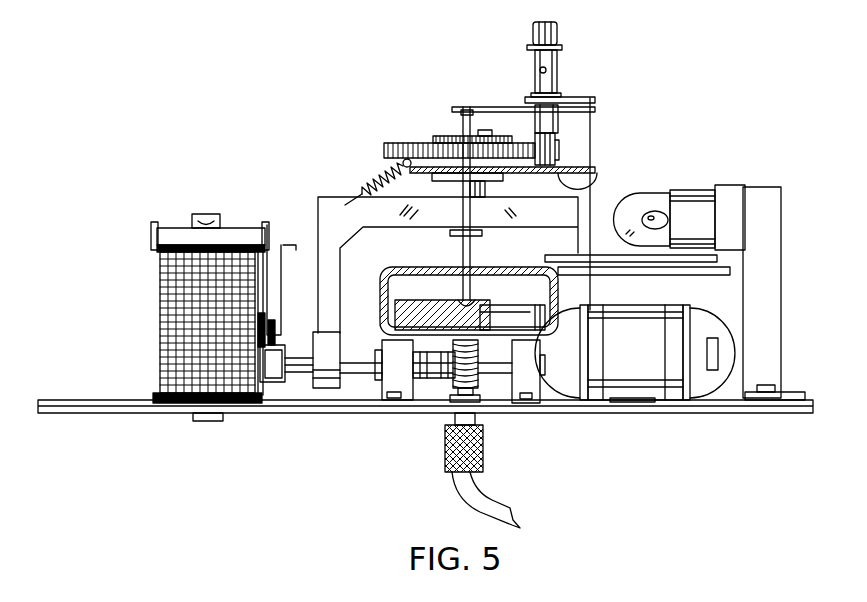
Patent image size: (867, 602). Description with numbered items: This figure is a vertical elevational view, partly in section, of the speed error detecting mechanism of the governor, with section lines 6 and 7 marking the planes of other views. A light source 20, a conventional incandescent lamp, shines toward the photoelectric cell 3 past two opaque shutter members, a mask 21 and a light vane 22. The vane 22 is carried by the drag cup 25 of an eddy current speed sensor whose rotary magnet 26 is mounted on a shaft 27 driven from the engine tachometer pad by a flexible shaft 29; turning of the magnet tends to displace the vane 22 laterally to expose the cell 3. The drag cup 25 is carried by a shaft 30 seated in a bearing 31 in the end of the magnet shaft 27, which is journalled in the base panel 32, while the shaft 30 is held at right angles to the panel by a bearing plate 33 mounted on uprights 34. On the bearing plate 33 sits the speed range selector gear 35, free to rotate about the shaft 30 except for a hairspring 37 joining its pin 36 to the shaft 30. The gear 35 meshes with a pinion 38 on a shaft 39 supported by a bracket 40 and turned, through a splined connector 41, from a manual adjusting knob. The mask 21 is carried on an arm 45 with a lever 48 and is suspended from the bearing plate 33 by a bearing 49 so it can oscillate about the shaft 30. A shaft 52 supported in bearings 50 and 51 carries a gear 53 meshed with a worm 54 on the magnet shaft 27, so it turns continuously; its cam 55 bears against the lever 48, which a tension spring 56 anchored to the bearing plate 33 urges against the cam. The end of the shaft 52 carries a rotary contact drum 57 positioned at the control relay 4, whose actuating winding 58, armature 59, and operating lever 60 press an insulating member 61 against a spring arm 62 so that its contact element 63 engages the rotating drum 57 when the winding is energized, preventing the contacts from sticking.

The photoelectric cell 3 is at (628, 366).
The control relay 4 is at (197, 342).
The section line 6 is at (500, 425).
The section line 7 is at (300, 445).
The light source 20 is at (655, 197).
The shutter member 21 is at (610, 255).
The light vane 22 is at (690, 275).
The drag cup 25 is at (378, 302).
The rotary magnet 26 is at (503, 329).
The magnet shaft 27 is at (497, 371).
The flexible shaft 29 is at (505, 510).
The shaft 30 is at (462, 123).
The bearing 31 is at (460, 300).
The base panel 32 is at (722, 413).
The bearing plate 33 is at (578, 186).
The uprights 34 is at (597, 178).
The speed range selector gear 35 is at (392, 143).
The pin 36 is at (510, 124).
The hairspring 37 is at (440, 136).
The pinion 38 is at (560, 143).
The pinion shaft 39 is at (560, 88).
The bracket 40 is at (595, 100).
The splined connector 41 is at (560, 31).
The arm 45 is at (557, 222).
The lever 48 is at (448, 265).
The bearing 49 is at (503, 177).
The bearing 50 is at (405, 398).
The bearing 51 is at (540, 413).
The shaft 52 is at (373, 350).
The gear 53 is at (394, 370).
The worm 54 is at (420, 363).
The cam 55 is at (330, 388).
The tension spring 56 is at (384, 172).
The rotary contact drum 57 is at (250, 384).
The actuating winding 58 is at (180, 289).
The armature 59 is at (172, 225).
The operating lever 60 is at (262, 283).
The insulating member 61 is at (241, 327).
The spring arm 62 is at (276, 300).
The contact element 63 is at (246, 337).